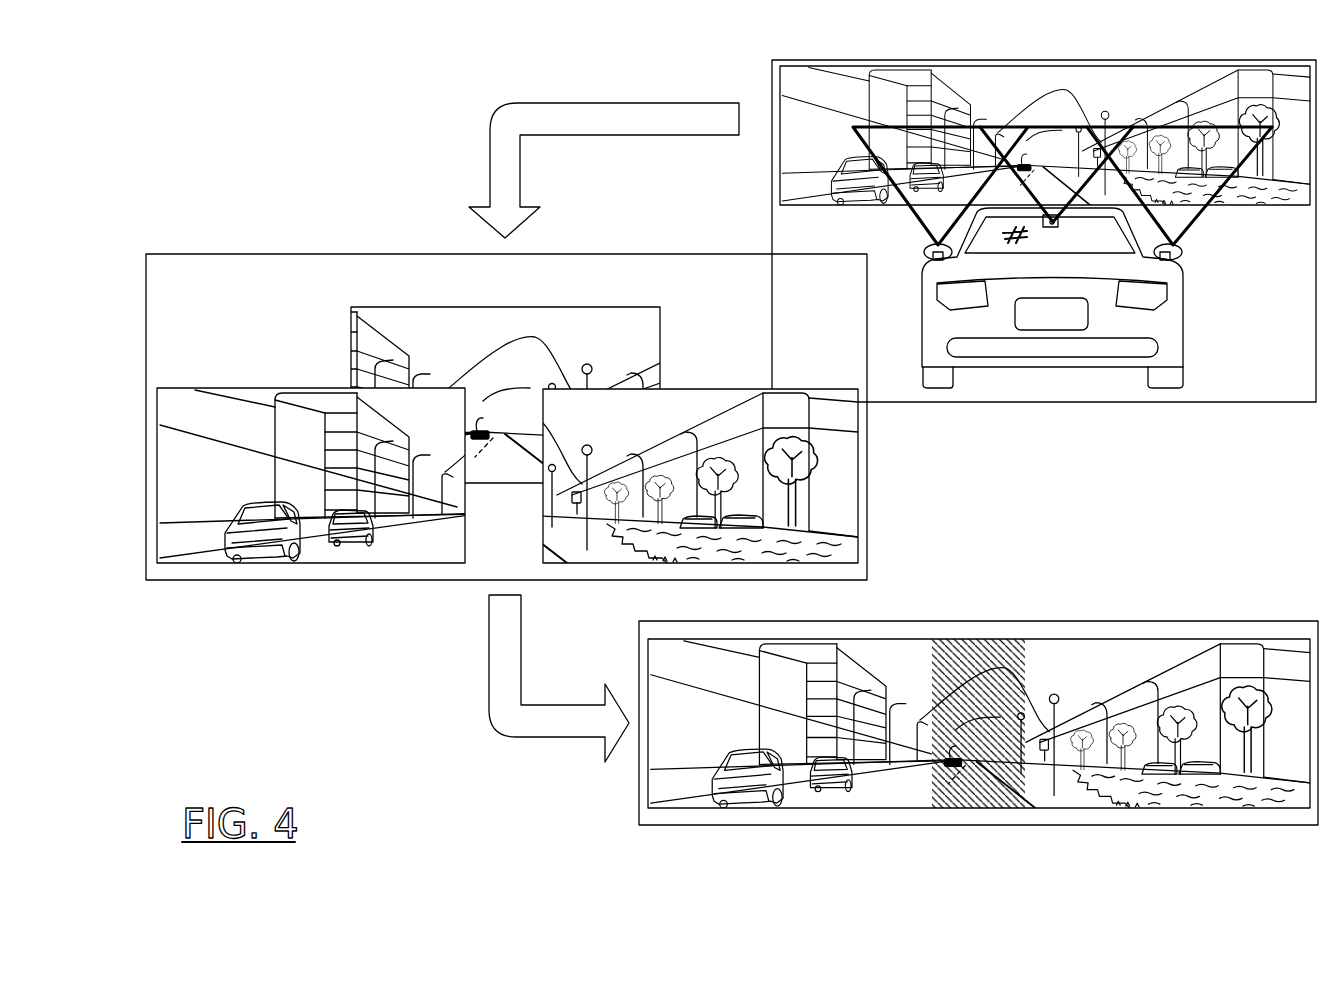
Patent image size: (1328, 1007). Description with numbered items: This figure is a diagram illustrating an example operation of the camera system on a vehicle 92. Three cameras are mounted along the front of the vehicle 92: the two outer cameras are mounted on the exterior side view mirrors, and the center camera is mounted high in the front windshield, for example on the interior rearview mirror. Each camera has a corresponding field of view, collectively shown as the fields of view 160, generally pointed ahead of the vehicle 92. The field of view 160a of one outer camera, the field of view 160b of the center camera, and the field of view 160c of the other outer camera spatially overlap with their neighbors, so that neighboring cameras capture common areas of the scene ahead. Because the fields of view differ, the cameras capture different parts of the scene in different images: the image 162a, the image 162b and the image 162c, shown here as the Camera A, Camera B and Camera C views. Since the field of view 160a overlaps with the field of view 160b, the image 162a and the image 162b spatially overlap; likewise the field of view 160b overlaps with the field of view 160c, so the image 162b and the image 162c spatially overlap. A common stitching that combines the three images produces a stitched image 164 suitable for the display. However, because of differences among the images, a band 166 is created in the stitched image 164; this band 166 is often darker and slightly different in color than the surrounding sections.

The fields of view 160 is at (532, 42).
The field of view 160a is at (1203, 217).
The field of view 160b is at (1057, 125).
The field of view 160c is at (910, 222).
The vehicle 92 is at (1185, 322).
The image 162a is at (600, 563).
The image 162b is at (386, 307).
The image 162c is at (287, 563).
The stitched image 164 is at (855, 803).
The band 166 is at (970, 788).